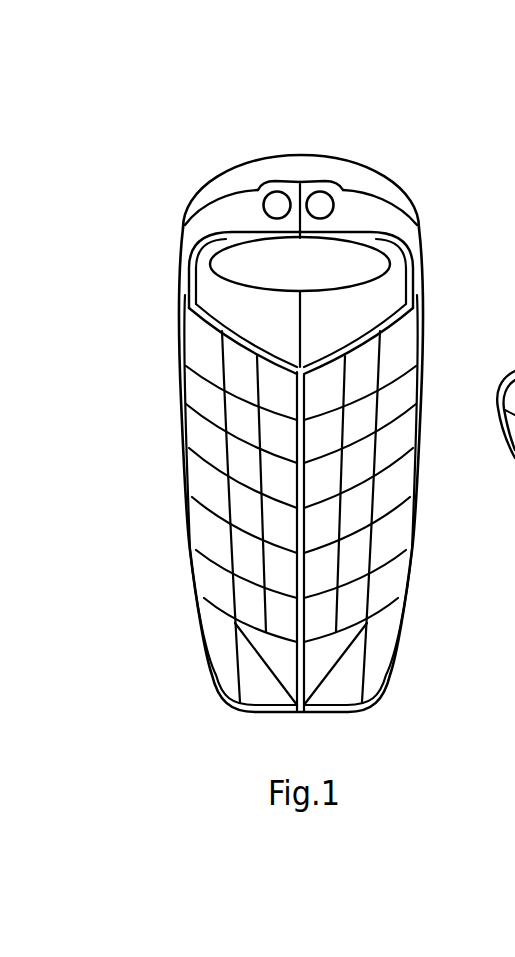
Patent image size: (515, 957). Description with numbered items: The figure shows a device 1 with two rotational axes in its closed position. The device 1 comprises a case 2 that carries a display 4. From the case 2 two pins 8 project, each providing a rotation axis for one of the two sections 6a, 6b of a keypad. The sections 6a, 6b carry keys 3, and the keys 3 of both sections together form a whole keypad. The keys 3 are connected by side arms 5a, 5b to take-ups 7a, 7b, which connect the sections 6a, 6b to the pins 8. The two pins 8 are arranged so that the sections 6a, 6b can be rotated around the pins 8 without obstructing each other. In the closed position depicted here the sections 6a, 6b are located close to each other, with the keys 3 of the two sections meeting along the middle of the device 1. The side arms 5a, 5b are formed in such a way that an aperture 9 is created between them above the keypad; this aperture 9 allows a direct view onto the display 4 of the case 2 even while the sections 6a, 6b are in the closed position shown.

The device 1 is at (435, 172).
The case 2 is at (368, 178).
The keys 3 is at (403, 480).
The display 4 is at (252, 262).
The side arm 5a is at (418, 280).
The side arm 5b is at (183, 282).
The section of keypad 6a is at (403, 237).
The section of keypad 6b is at (203, 232).
The take-up 7a is at (343, 190).
The take-up 7b is at (253, 193).
The pins 8 is at (320, 197).
The aperture 9 is at (243, 288).